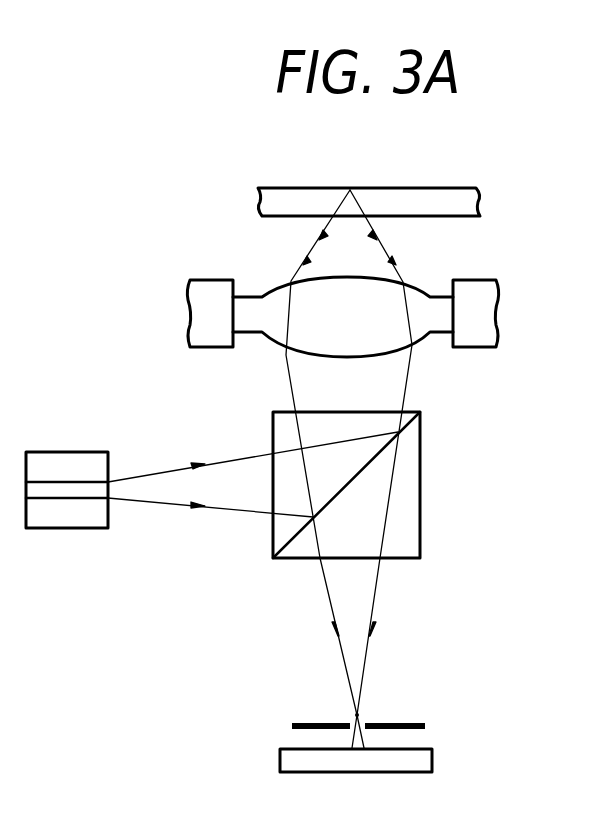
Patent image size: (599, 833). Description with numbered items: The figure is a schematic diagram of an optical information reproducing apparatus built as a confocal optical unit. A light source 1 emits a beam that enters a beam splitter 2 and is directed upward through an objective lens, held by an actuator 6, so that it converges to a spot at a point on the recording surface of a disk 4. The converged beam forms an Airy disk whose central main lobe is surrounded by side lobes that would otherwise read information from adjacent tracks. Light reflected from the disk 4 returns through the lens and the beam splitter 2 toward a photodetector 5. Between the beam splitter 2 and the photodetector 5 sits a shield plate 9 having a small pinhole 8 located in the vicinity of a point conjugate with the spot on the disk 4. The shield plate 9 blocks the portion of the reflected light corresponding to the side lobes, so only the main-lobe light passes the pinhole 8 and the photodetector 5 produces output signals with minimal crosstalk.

The light source 1 is at (93, 528).
The beam splitter 2 is at (421, 550).
The disk 4 is at (455, 188).
The photodetector 5 is at (433, 760).
The actuator 6 is at (492, 280).
The pinhole 8 is at (360, 716).
The shield plate 9 is at (420, 722).